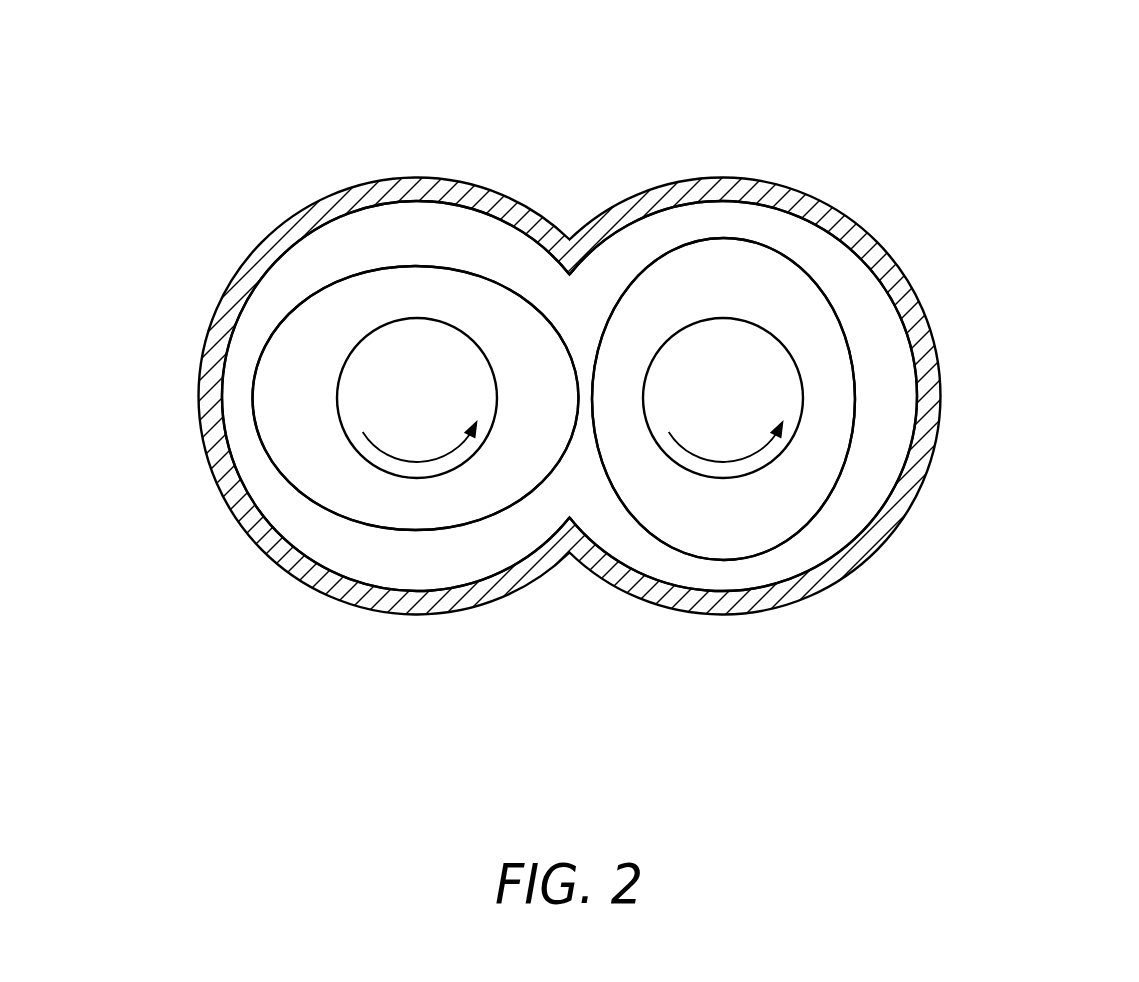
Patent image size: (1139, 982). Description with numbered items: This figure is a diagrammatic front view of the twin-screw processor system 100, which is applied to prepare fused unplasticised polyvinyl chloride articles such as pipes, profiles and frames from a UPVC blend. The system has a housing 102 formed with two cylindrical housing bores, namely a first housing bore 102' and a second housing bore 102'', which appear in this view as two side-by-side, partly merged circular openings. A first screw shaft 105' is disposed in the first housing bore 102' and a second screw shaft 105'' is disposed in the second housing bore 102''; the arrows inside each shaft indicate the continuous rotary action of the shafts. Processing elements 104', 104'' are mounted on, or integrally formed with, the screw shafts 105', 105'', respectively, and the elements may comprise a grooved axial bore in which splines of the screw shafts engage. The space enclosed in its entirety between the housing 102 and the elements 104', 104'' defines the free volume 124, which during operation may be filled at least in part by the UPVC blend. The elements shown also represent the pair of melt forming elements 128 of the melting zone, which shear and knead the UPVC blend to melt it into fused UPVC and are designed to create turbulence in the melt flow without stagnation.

The twin-screw processor system 100 is at (1018, 75).
The housing 102 is at (570, 359).
The first housing bore 102' is at (393, 348).
The second housing bore 102'' is at (757, 374).
The free volume 124 is at (460, 243).
The processing element 104' is at (376, 350).
The processing element 104'' is at (817, 399).
The melt forming element 128 is at (393, 265).
The first screw shaft 105' is at (417, 507).
The second screw shaft 105'' is at (723, 507).